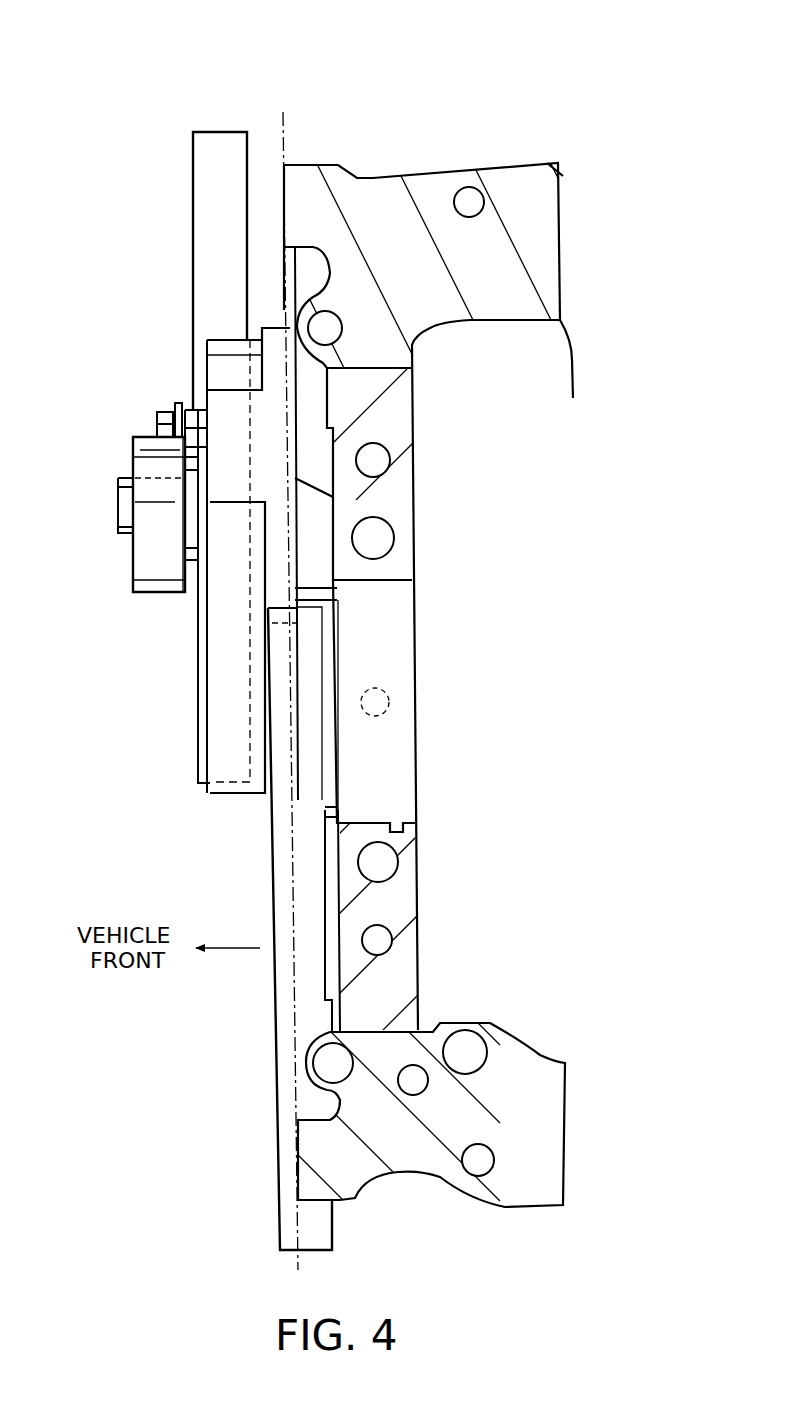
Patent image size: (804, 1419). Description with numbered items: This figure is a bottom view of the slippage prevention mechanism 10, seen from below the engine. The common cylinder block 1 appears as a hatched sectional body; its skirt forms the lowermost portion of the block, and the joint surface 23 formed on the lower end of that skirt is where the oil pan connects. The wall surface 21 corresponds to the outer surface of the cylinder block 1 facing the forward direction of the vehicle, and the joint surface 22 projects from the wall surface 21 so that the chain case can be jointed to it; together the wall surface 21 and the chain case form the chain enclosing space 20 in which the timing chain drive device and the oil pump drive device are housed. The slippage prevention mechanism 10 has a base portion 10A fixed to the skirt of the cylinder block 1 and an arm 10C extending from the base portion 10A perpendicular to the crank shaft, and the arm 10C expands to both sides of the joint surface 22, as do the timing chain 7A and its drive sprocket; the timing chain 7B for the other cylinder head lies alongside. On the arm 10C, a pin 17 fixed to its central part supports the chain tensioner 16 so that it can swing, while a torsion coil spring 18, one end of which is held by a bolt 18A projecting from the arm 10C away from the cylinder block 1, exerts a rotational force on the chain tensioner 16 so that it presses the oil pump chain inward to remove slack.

The cylinder block 1 is at (404, 157).
The timing chain 7A is at (290, 1222).
The timing chain 7B is at (203, 150).
The slippage prevention mechanism 10 is at (212, 818).
The base portion 10A is at (278, 372).
The arm 10C is at (235, 695).
The chain tensioner 16 is at (150, 570).
The pin 17 is at (128, 497).
The torsion coil spring 18 is at (160, 412).
The bolt 18A is at (174, 418).
The chain enclosing space 20 is at (153, 234).
The wall surface 21 is at (340, 893).
The joint surface 22 is at (276, 185).
The joint surface 23 is at (535, 278).